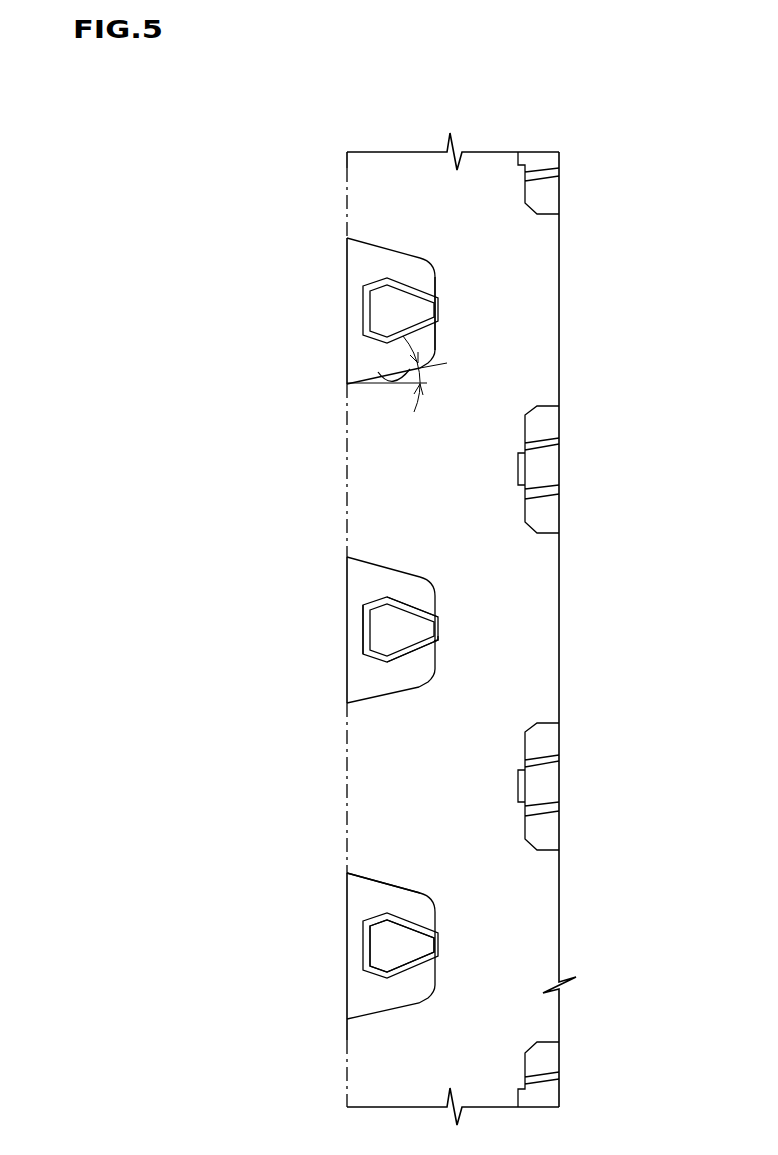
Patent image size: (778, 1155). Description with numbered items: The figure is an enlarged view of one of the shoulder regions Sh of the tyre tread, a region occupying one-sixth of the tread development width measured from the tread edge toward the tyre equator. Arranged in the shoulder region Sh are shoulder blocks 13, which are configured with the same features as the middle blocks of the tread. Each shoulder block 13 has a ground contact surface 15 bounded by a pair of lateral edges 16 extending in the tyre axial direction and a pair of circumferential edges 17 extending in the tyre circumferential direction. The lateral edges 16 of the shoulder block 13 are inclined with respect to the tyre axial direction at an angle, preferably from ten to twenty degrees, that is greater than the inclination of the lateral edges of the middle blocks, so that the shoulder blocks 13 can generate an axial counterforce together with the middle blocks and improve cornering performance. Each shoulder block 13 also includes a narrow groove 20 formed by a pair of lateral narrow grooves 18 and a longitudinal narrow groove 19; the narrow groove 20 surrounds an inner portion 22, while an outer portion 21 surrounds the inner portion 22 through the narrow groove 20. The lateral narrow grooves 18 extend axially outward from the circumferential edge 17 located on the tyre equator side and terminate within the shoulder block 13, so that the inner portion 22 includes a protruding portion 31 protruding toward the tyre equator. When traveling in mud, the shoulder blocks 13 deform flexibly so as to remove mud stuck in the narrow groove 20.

The shoulder region Sh is at (417, 180).
The shoulder block 13 is at (413, 311).
The ground contact surface 15 is at (368, 265).
The lateral edges 16 is at (385, 245).
The circumferential edges 17 is at (437, 282).
The narrow groove 20 is at (322, 612).
The lateral narrow grooves 18 is at (403, 603).
The longitudinal narrow groove 19 is at (367, 629).
The outer portion 21 is at (390, 682).
The inner portion 22 is at (412, 630).
The protruding portion 31 is at (440, 644).